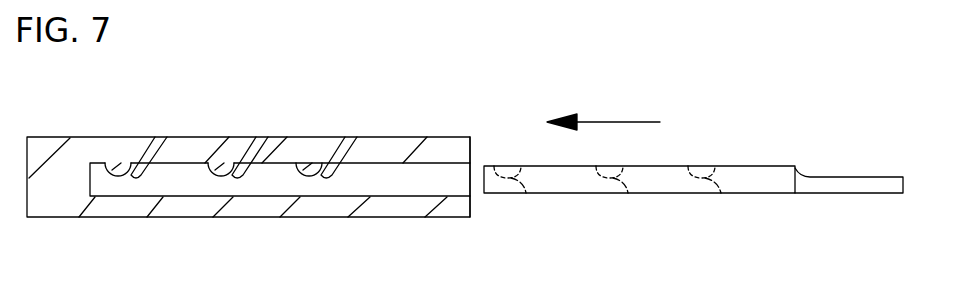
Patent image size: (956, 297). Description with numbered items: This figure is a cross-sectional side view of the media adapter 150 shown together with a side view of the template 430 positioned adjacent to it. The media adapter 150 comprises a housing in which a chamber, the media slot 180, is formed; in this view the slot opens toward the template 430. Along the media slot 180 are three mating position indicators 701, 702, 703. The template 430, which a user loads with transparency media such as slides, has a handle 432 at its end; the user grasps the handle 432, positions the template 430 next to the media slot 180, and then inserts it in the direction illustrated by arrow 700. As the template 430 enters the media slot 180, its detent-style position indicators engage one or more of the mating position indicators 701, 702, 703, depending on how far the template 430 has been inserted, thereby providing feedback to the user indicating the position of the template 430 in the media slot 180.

The media adapter 150 is at (124, 122).
The mating position indicator 701 is at (167, 137).
The mating position indicator 702 is at (268, 137).
The mating position indicator 703 is at (357, 137).
The media slot 180 is at (493, 147).
The arrow 700 is at (615, 121).
The template 430 is at (754, 148).
The handle 432 is at (830, 195).